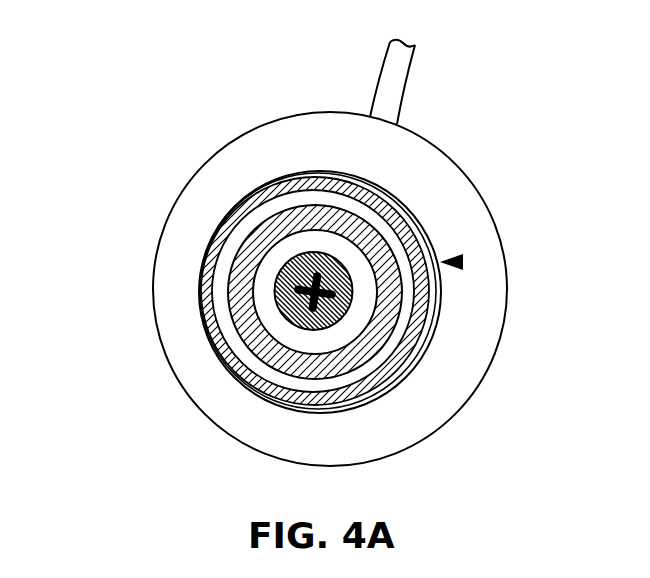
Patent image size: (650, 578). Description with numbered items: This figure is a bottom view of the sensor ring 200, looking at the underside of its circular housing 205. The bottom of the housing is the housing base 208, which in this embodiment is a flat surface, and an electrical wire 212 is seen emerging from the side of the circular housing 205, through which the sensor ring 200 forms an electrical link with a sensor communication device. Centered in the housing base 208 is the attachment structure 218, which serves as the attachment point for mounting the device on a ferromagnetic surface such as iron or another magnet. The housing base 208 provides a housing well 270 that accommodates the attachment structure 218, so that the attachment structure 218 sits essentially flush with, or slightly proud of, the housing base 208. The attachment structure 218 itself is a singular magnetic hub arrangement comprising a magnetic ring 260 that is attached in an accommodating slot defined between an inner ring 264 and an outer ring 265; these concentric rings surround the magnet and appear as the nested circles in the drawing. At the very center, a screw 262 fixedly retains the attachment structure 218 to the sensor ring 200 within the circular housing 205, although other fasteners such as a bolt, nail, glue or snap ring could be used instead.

The sensor ring 200 is at (356, 52).
The circular housing 205 is at (153, 300).
The housing base 208 is at (237, 162).
The electrical wire 212 is at (405, 108).
The attachment structure 218 is at (223, 207).
The magnetic ring 260 is at (308, 198).
The screw 262 is at (295, 313).
The inner ring 264 is at (338, 360).
The outer ring 265 is at (415, 333).
The housing well 270 is at (448, 262).